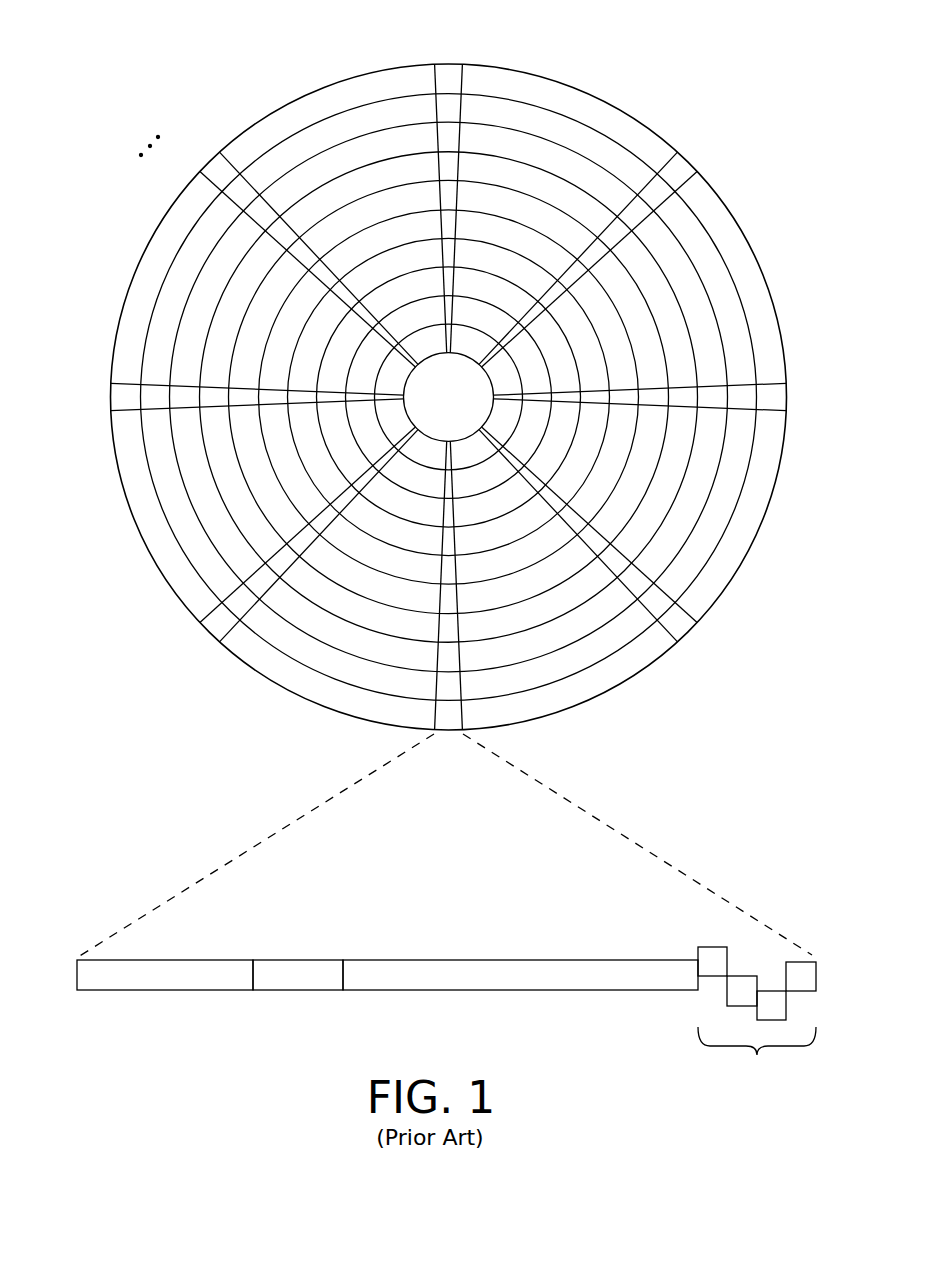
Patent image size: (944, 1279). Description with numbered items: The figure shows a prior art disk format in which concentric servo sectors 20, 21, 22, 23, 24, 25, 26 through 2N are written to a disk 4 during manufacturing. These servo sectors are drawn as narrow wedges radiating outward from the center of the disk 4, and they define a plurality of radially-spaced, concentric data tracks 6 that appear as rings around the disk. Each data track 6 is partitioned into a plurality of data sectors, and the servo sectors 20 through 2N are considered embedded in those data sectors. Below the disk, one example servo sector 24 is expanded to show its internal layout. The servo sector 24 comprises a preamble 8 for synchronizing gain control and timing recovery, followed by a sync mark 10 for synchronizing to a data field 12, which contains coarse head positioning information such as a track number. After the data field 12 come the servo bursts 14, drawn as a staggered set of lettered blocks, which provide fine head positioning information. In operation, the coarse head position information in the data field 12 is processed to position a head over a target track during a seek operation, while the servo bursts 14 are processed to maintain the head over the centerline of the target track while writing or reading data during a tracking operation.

The disk 4 is at (195, 63).
The data tracks 6 is at (566, 128).
The servo sector 20 is at (452, 72).
The servo sector 21 is at (684, 167).
The servo sector 22 is at (790, 399).
The servo sector 23 is at (680, 625).
The servo sector 24 is at (296, 803).
The servo sector 25 is at (213, 628).
The servo sector 26 is at (113, 393).
The servo sector 2N is at (217, 167).
The preamble 8 is at (146, 990).
The sync mark 10 is at (298, 990).
The data field 12 is at (512, 990).
The servo bursts 14 is at (680, 925).